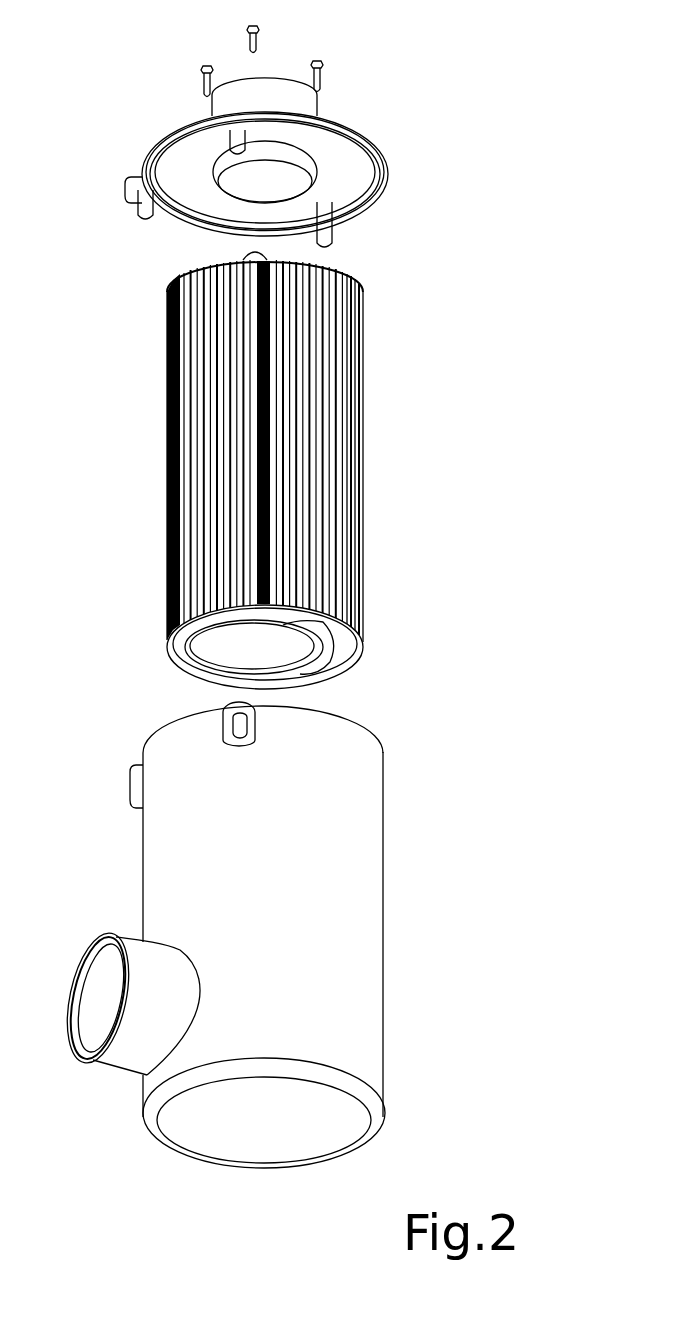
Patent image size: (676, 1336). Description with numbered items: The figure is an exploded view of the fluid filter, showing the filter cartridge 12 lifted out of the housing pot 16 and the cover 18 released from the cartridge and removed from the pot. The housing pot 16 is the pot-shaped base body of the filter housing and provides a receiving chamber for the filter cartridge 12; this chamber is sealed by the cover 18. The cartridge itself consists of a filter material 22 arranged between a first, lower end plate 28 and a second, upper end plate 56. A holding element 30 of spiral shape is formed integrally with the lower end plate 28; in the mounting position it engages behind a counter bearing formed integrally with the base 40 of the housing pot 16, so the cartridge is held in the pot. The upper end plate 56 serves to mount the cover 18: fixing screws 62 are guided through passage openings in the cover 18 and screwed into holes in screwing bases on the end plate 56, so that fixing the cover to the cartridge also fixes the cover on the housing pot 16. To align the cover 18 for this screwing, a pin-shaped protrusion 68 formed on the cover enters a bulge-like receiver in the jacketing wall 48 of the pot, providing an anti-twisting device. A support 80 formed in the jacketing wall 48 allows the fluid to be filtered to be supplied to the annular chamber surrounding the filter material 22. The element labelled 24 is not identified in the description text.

The filter cartridge 12 is at (382, 431).
The housing pot 16 is at (360, 865).
The cover 18 is at (377, 126).
The filter material 22 is at (322, 490).
The cover boss 24 is at (272, 100).
The end plate 28 is at (347, 645).
The holding element 30 is at (175, 645).
The base 40 is at (295, 1105).
The jacketing wall 48 is at (360, 923).
The end plate 56 is at (175, 283).
The fixing screws 62 is at (233, 39).
The pin-shaped protrusion 68 is at (333, 220).
The support 80 is at (134, 958).